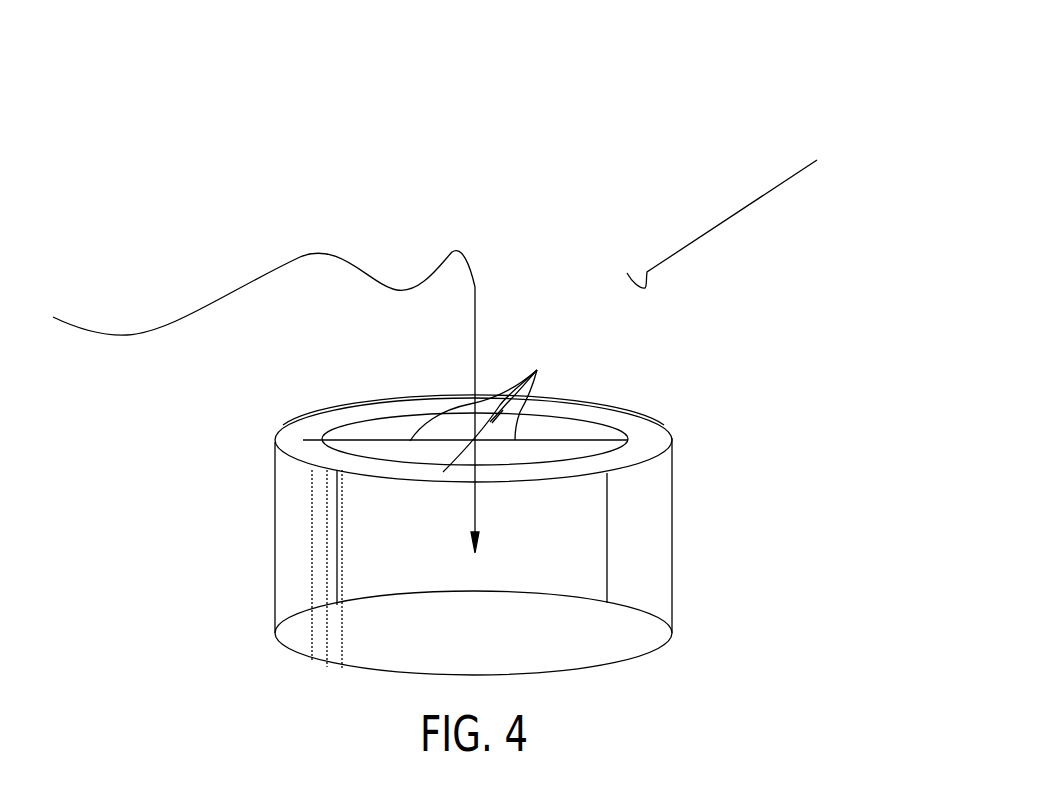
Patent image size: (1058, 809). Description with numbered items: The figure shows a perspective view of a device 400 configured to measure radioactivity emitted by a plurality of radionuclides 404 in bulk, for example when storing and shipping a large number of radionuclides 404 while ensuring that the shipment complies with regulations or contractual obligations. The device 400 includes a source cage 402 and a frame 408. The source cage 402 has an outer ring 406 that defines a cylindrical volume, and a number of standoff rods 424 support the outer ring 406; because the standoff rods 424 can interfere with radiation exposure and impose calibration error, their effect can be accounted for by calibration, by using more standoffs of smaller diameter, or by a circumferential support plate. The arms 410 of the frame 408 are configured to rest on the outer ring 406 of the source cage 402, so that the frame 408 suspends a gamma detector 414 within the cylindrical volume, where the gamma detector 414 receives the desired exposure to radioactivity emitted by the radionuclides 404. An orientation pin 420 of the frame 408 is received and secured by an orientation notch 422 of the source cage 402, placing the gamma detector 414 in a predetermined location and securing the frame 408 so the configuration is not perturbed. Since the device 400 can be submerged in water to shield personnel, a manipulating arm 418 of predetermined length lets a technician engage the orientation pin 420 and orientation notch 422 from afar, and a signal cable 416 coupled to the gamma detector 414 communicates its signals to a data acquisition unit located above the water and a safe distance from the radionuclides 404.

The device 400 is at (631, 88).
The source cage 402 is at (692, 492).
The radionuclides 404 is at (343, 552).
The outer ring 406 is at (645, 418).
The frame 408 is at (486, 314).
The arms 410 is at (537, 372).
The gamma detector 414 is at (477, 543).
The signal cable 416 is at (297, 255).
The manipulating arm 418 is at (733, 215).
The orientation pin 420 is at (303, 440).
The orientation notch 422 is at (390, 417).
The standoff rods 424 is at (672, 607).